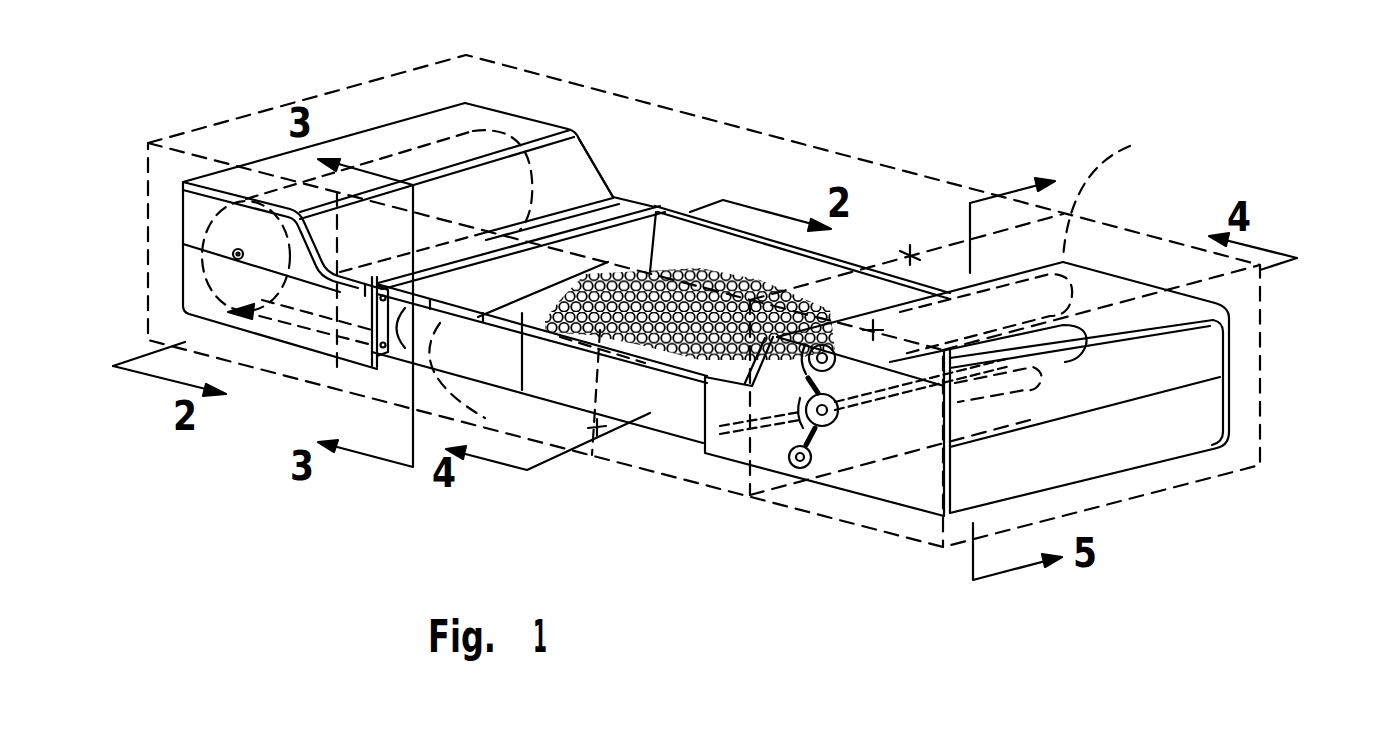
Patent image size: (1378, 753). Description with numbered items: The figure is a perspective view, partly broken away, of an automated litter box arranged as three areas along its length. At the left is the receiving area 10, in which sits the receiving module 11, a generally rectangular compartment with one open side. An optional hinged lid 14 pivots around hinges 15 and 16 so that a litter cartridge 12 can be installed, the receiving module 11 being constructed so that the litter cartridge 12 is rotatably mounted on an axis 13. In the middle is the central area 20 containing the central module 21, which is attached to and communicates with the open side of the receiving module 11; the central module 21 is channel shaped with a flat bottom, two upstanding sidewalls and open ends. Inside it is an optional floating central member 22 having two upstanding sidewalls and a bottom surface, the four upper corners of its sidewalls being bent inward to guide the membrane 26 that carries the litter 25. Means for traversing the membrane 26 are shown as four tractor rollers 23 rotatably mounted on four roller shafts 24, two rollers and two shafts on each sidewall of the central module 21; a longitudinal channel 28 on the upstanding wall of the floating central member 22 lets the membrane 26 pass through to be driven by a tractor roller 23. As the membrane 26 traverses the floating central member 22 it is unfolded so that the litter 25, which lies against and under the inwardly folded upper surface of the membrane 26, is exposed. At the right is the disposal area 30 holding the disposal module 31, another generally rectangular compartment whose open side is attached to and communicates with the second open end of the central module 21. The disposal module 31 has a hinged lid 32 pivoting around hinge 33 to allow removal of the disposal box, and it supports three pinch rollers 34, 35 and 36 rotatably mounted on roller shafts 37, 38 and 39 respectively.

The receiving area 10 is at (512, 60).
The receiving module 11 is at (193, 304).
The litter cartridge 12 is at (175, 233).
The axis 13 is at (232, 262).
The hinged lid 14 is at (268, 155).
The hinge 15 is at (613, 200).
The hinge 16 is at (388, 277).
The central area 20 is at (712, 118).
The central module 21 is at (853, 257).
The floating central member 22 is at (650, 413).
The tractor rollers 23 is at (392, 372).
The roller shafts 24 is at (474, 378).
The litter 25 is at (657, 267).
The membrane 26 is at (500, 365).
The longitudinal channel 28 is at (597, 436).
The disposal area 30 is at (1103, 218).
The disposal module 31 is at (1228, 398).
The hinged lid 32 is at (1228, 347).
The hinge 33 is at (707, 393).
The pinch roller 34 is at (797, 433).
The pinch roller 35 is at (867, 433).
The pinch roller 36 is at (1112, 188).
The roller shaft 37 is at (792, 462).
The roller shaft 38 is at (820, 447).
The roller shaft 39 is at (873, 330).